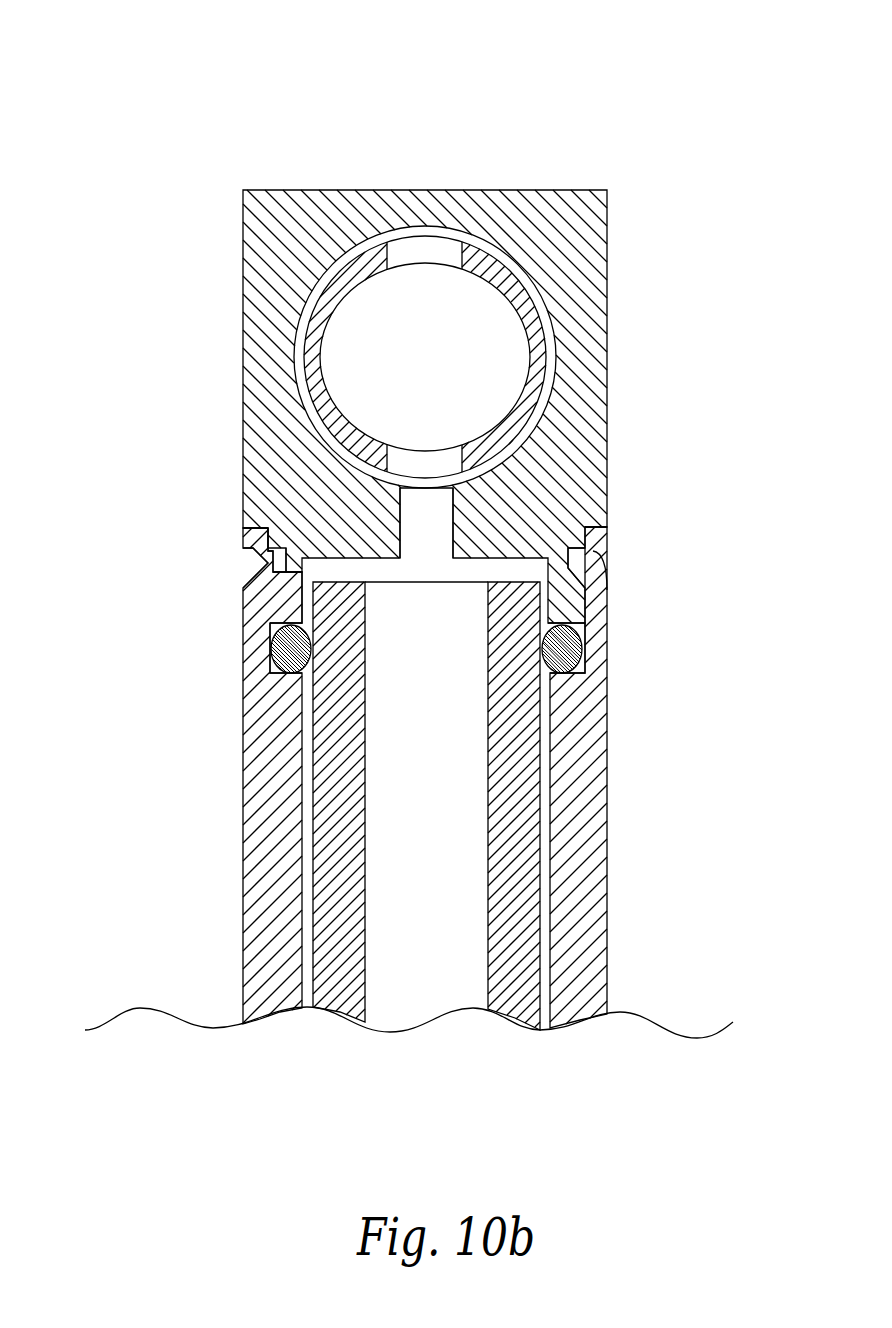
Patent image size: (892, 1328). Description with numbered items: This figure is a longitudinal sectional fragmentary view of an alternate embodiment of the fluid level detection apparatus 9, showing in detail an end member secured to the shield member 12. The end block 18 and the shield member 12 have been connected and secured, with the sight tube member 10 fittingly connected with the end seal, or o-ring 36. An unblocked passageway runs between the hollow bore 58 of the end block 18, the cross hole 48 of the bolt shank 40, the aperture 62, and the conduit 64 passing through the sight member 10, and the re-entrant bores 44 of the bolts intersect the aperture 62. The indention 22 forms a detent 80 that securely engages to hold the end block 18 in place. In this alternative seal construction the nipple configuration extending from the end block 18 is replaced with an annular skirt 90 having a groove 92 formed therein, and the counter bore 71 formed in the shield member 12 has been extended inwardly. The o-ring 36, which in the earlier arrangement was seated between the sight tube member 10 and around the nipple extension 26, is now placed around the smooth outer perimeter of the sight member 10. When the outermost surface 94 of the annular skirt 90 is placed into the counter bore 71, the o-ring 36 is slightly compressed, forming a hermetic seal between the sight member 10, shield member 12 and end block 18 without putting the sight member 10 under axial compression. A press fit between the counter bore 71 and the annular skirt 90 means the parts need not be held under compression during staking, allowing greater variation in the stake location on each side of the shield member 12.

The fluid level detection apparatus 9 is at (672, 130).
The sight tube member 10 is at (340, 967).
The shield member 12 is at (270, 887).
The end block 18 is at (578, 263).
The indention 22 is at (252, 567).
The nipple extension 26 is at (465, 662).
The o-ring 36 is at (280, 680).
The bolt shank 40 is at (487, 263).
The re-entrant bore 44 is at (420, 352).
The cross hole 48 is at (417, 246).
The hollow bore 58 is at (300, 350).
The aperture 62 is at (433, 517).
The conduit 64 is at (398, 765).
The counter bore 71 is at (268, 622).
The detent 80 is at (252, 554).
The annular skirt 90 is at (262, 660).
The groove 92 is at (267, 527).
The outermost surface 94 is at (583, 643).